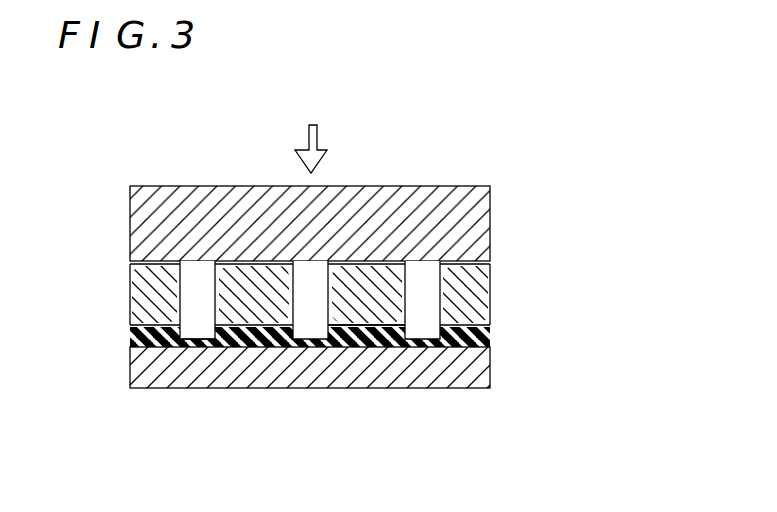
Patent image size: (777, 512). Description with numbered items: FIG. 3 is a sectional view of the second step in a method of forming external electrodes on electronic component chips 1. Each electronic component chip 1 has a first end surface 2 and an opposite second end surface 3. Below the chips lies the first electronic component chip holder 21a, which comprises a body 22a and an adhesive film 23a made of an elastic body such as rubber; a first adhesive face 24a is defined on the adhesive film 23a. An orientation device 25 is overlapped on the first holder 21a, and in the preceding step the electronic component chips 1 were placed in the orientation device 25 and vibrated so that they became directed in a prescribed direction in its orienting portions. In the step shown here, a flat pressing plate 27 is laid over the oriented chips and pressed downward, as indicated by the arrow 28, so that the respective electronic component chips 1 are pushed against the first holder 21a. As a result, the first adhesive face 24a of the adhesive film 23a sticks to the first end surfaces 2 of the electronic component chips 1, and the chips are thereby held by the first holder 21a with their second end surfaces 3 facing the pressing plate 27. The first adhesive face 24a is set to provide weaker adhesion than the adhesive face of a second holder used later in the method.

The electronic component chip 1 is at (305, 247).
The first end surface 2 is at (202, 345).
The second end surface 3 is at (195, 262).
The first electronic component chip holder 21a is at (317, 351).
The body 22a is at (138, 368).
The adhesive film 23a is at (132, 338).
The first adhesive face 24a is at (382, 322).
The orientation device 25 is at (505, 292).
The pressing plate 27 is at (491, 197).
The arrow 28 is at (318, 130).